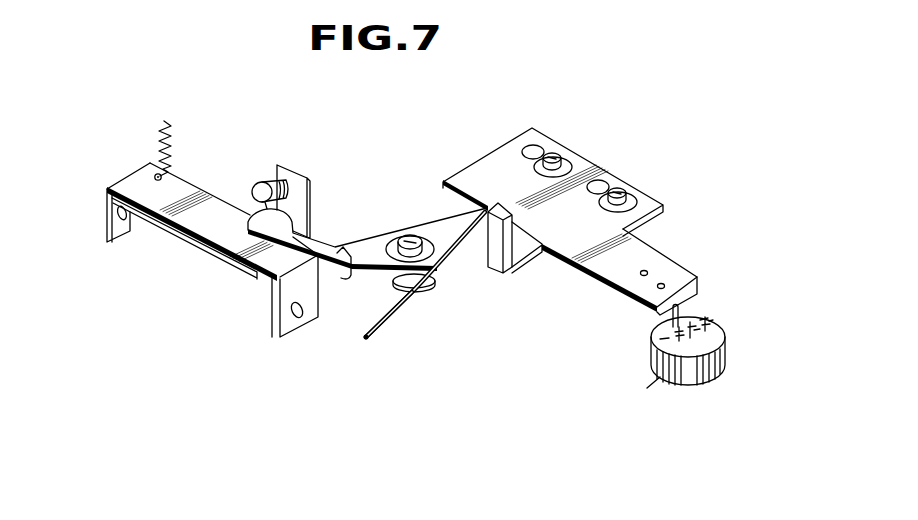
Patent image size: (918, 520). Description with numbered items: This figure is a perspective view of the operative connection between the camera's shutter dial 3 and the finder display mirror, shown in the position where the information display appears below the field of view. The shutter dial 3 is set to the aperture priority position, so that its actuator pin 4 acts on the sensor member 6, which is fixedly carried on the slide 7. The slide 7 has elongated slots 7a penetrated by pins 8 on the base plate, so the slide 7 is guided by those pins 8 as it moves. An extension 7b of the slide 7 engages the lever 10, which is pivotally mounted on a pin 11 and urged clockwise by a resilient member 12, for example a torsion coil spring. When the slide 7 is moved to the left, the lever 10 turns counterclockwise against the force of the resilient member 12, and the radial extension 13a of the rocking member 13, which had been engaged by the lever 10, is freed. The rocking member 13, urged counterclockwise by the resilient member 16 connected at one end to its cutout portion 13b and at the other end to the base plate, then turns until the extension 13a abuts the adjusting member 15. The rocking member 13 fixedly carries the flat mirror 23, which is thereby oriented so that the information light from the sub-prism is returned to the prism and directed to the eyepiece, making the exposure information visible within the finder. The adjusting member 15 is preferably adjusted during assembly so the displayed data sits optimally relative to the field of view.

The shutter dial 3 is at (720, 333).
The actuator pin 4 is at (688, 302).
The sensor member 6 is at (660, 316).
The slide 7 is at (638, 256).
The elongated slots 7a is at (612, 188).
The extension 7b is at (499, 206).
The pins 8 is at (628, 188).
The lever 10 is at (452, 250).
The pin 11 is at (409, 240).
The resilient member 12 is at (398, 318).
The rocking member 13 is at (208, 238).
The radial extension 13a is at (298, 190).
The cutout portion 13b is at (156, 177).
The adjusting member 15 is at (265, 183).
The resilient member 16 is at (160, 162).
The flat mirror 23 is at (158, 226).